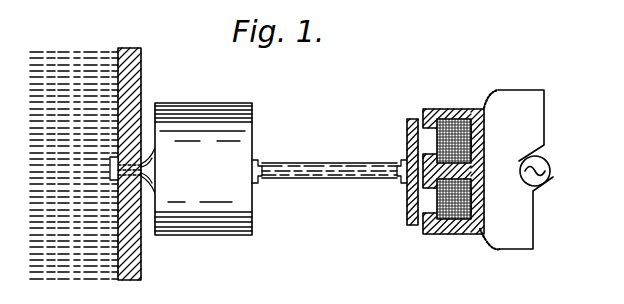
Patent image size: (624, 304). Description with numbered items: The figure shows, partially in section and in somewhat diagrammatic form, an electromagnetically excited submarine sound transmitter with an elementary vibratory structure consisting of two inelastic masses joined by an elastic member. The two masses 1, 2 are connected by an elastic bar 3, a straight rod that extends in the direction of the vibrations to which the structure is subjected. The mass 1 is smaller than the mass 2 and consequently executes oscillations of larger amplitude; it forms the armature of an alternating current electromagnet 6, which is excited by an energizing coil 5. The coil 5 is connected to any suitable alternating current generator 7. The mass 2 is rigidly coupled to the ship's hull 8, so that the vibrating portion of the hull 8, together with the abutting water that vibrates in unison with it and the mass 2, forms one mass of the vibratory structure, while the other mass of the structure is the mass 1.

The mass 1 is at (407, 200).
The mass 2 is at (240, 130).
The elastic bar 3 is at (333, 172).
The energizing coil 5 is at (428, 108).
The alternating current electromagnet 6 is at (485, 156).
The alternating current generator 7 is at (549, 167).
The ship's hull 8 is at (141, 73).